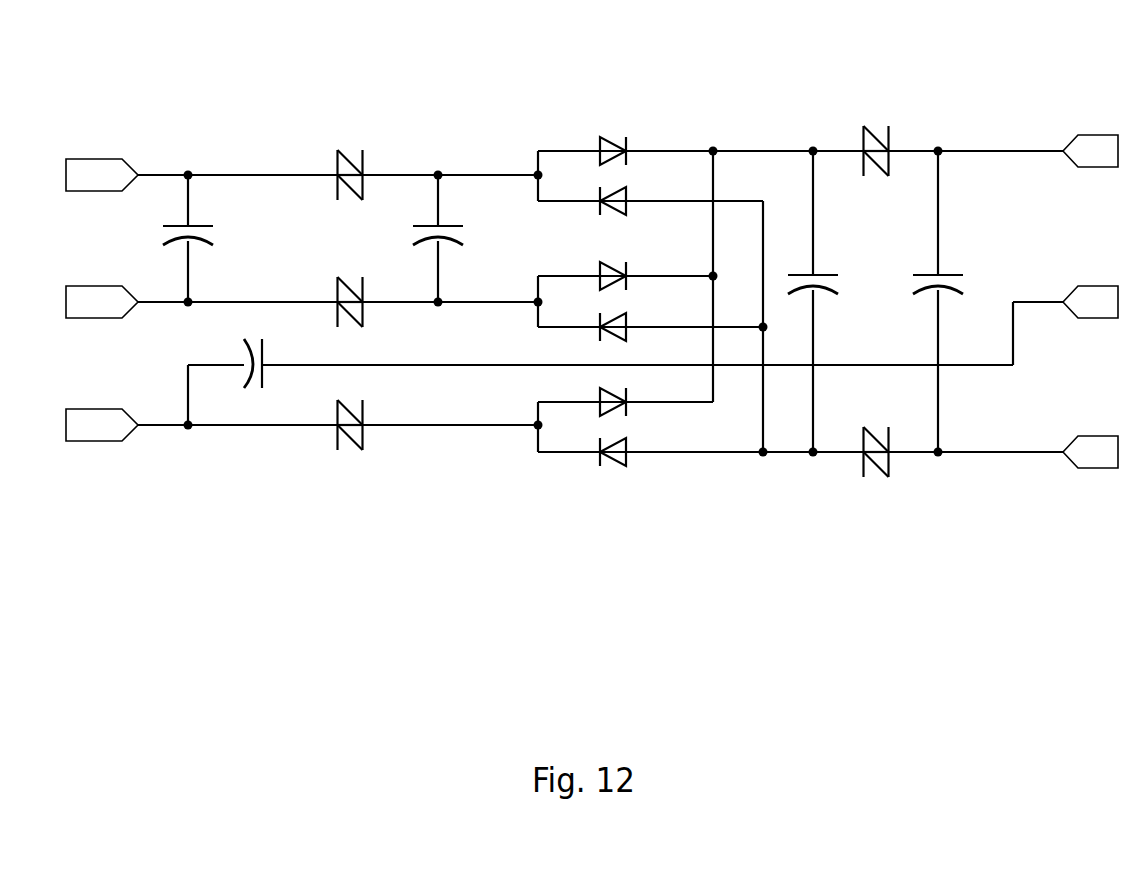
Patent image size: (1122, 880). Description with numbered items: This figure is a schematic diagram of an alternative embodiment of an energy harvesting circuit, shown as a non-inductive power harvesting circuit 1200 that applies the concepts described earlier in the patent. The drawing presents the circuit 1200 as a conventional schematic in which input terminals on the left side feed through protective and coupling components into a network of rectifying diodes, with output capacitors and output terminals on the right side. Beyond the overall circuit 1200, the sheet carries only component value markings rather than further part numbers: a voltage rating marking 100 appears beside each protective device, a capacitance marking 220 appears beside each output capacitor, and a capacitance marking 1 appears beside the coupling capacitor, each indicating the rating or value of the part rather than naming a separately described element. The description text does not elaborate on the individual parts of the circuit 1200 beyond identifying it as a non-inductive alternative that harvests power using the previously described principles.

The non-inductive power harvesting circuit 1200 is at (592, 255).
The 100V bidirectional TVS diodes 100 is at (338, 316).
The 220pF output capacitors 220 is at (906, 301).
The 1nF coupling capacitor 1 is at (294, 381).